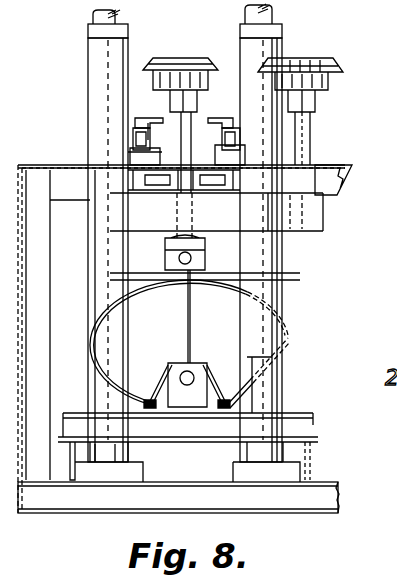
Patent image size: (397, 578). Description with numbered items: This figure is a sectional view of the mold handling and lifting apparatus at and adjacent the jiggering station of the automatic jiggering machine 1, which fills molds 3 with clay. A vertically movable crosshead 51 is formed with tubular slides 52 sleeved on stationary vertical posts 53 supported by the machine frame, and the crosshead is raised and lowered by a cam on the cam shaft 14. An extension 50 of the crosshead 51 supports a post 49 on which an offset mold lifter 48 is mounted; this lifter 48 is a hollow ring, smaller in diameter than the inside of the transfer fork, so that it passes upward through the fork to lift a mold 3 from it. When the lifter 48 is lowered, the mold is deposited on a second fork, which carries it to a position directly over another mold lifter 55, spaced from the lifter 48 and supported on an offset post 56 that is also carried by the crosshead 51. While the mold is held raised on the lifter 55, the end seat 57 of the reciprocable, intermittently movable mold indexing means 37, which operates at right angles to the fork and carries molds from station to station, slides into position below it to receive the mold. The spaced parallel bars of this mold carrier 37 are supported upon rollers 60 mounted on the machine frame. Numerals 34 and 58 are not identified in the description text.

The automatic jiggering machine 1 is at (28, 166).
The mold 3 is at (322, 58).
The cam shaft 14 is at (188, 378).
The cable loop 34 is at (100, 333).
The mold indexing means 37 is at (135, 138).
The offset mold lifter 48 is at (328, 80).
The post 49 is at (312, 125).
The extension 50 is at (323, 210).
The crosshead 51 is at (258, 253).
The tubular slides 52 is at (282, 287).
The vertical posts 53 is at (282, 395).
The mold lifter 55 is at (210, 82).
The offset post 56 is at (197, 123).
The end seat 57 is at (228, 123).
The lever 58 is at (138, 122).
The rollers 60 is at (128, 152).